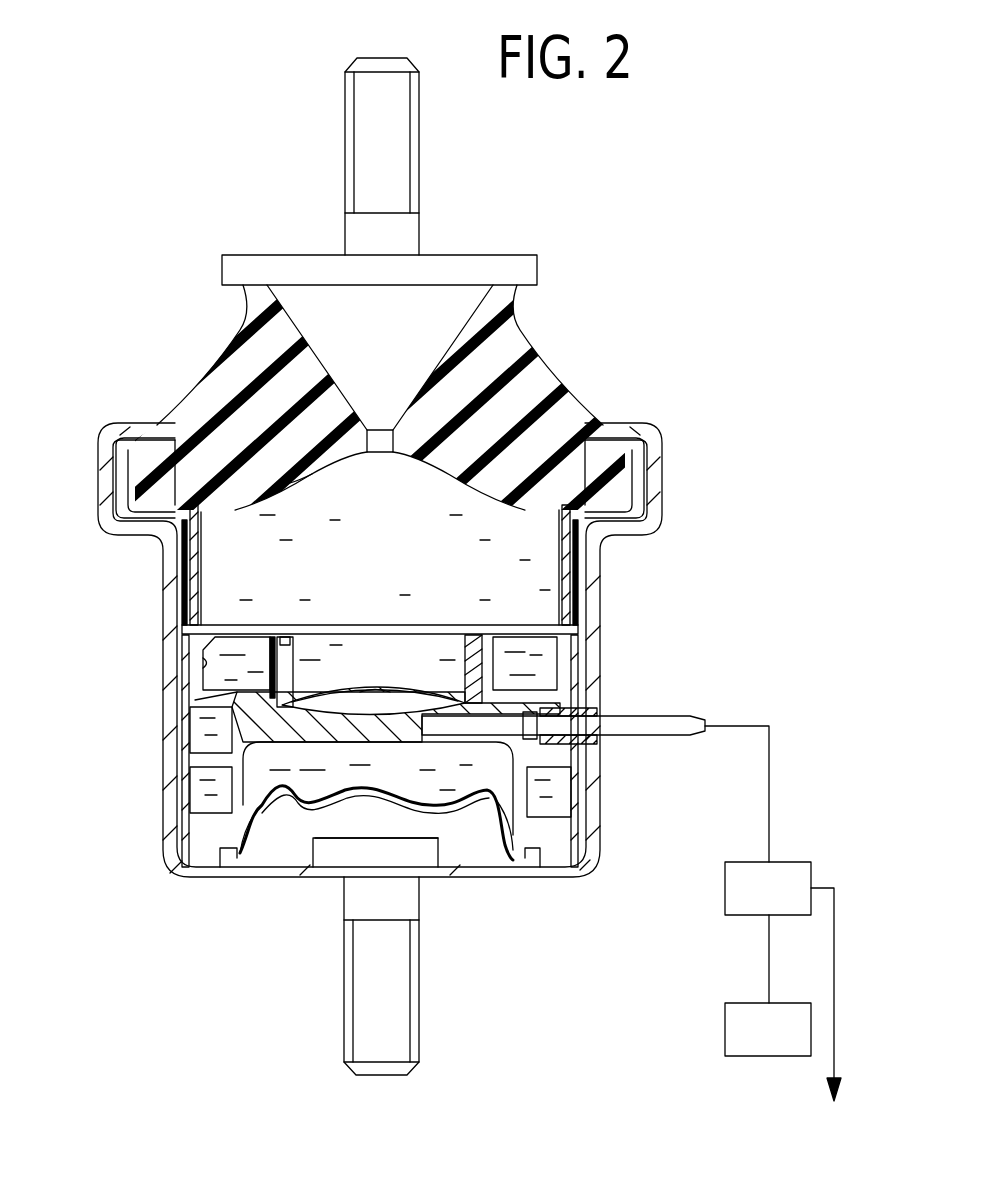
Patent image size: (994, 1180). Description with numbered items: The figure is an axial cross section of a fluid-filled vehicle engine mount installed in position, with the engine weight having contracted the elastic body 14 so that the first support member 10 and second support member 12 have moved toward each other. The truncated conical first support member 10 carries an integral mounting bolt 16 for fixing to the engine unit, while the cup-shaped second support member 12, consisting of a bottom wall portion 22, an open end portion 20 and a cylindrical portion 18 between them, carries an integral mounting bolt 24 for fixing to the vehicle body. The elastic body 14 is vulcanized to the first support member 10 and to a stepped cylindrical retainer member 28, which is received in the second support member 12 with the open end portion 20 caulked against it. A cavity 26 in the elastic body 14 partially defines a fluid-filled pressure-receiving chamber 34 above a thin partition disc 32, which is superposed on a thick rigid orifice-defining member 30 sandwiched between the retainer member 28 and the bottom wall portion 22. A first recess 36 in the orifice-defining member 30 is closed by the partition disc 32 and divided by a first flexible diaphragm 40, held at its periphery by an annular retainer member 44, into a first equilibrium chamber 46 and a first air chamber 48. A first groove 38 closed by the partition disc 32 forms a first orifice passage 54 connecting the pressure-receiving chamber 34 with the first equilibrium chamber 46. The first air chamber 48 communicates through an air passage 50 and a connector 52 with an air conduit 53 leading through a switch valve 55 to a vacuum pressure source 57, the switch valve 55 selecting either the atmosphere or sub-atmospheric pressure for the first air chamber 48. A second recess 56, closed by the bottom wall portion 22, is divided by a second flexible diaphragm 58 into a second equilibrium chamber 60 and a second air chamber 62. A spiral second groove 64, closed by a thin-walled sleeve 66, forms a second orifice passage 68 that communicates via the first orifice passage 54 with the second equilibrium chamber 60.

The first rigid support member 10 is at (474, 240).
The second rigid support member 12 is at (148, 573).
The elastic body 14 is at (218, 310).
The mounting bolt 16 is at (362, 110).
The cylindrical portion 18 is at (180, 650).
The open end portion 20 is at (112, 447).
The bottom wall portion 22 is at (222, 852).
The mounting bolt 24 is at (396, 1032).
The cavity 26 is at (310, 473).
The stepped cylindrical retainer member 28 is at (605, 520).
The orifice-defining member 30 is at (595, 648).
The partition disc 32 is at (260, 634).
The pressure-receiving chamber 34 is at (380, 556).
The first recess 36 is at (322, 648).
The first groove 38 is at (212, 668).
The first flexible diaphragm 40 is at (445, 650).
The annular retainer member 44 is at (505, 650).
The first variable-volume equilibrium chamber 46 is at (416, 648).
The first air chamber 48 is at (375, 660).
The air passage 50 is at (462, 745).
The connector 52 is at (640, 745).
The air conduit 53 is at (788, 758).
The first orifice passage 54 is at (560, 680).
The switch valve 55 is at (768, 888).
The second recess 56 is at (470, 797).
The vacuum pressure source 57 is at (768, 1029).
The second flexible diaphragm 58 is at (458, 745).
The second variable-volume equilibrium chamber 60 is at (368, 770).
The second air chamber 62 is at (280, 840).
The second groove 64 is at (212, 722).
The thin-walled sleeve 66 is at (212, 790).
The second orifice passage 68 is at (575, 810).